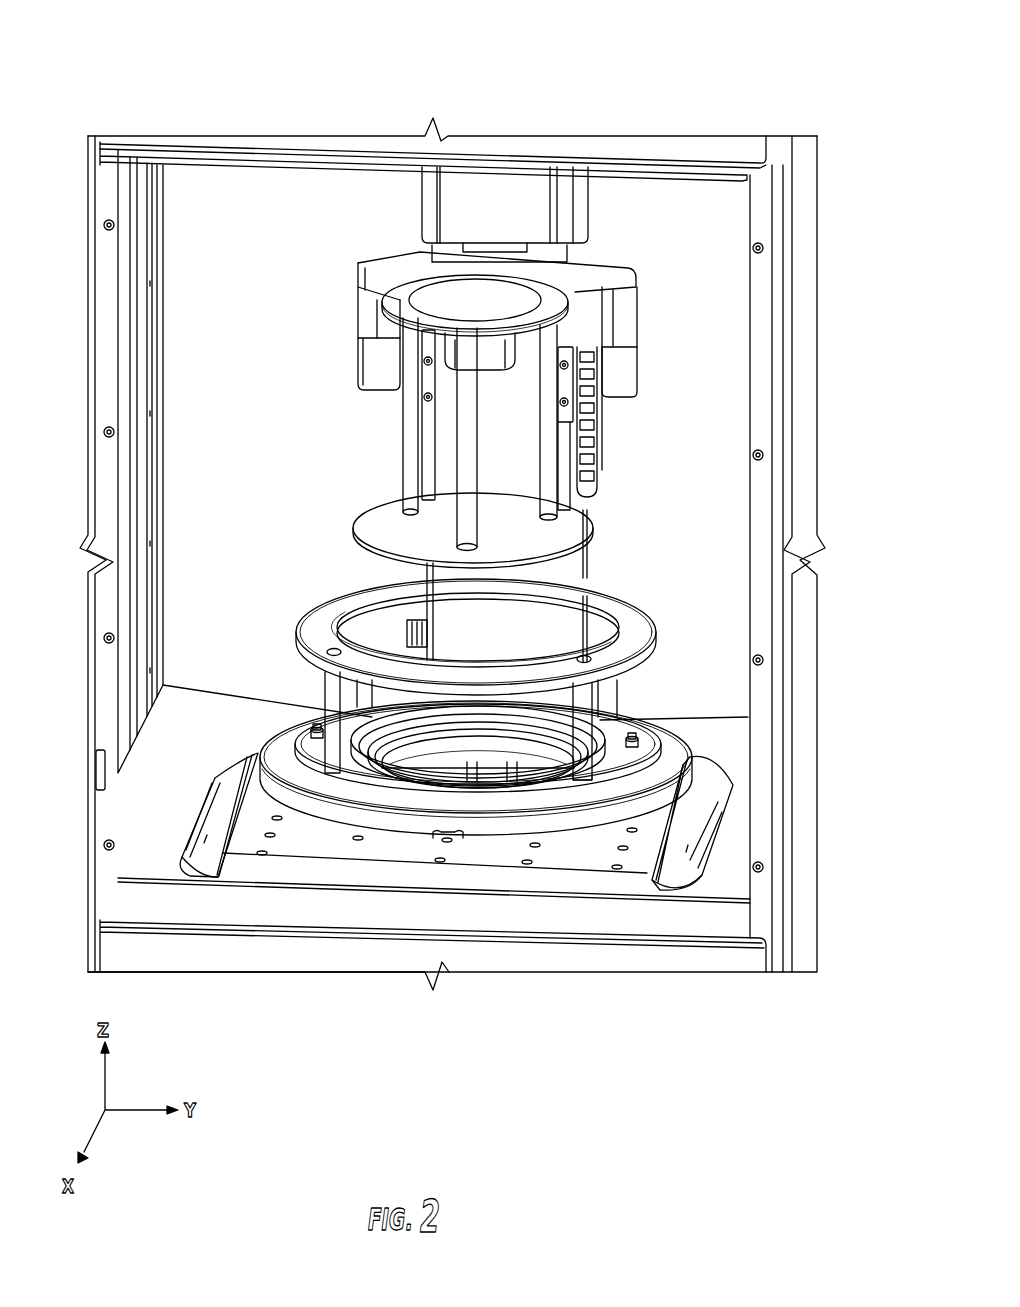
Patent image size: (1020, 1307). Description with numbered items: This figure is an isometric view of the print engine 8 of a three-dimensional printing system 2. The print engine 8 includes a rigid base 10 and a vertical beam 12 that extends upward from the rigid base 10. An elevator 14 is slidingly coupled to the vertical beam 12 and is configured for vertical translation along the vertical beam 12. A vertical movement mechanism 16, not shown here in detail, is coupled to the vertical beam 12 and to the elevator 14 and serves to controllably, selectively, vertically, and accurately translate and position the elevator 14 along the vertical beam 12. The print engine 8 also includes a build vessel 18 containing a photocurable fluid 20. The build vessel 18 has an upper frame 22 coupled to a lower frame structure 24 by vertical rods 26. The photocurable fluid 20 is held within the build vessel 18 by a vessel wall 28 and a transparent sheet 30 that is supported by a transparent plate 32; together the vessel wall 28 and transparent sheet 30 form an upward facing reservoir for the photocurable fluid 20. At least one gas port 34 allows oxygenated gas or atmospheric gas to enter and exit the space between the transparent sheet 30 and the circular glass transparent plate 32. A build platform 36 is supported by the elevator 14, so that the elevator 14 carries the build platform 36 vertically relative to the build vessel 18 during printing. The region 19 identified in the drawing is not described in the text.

The 3D printing system 2 is at (640, 55).
The print engine 8 is at (617, 202).
The rigid base 10 is at (632, 845).
The vertical beam 12 is at (512, 190).
The elevator 14 is at (608, 330).
The vertical movement mechanism 16 is at (517, 452).
The build vessel 18 is at (700, 665).
The ring opening 19 is at (545, 633).
The photocurable fluid 20 is at (330, 713).
The upper frame 22 is at (312, 602).
The lower frame structure 24 is at (400, 753).
The vertical rods 26 is at (580, 785).
The vessel wall 28 is at (413, 802).
The transparent sheet 30 is at (455, 775).
The transparent plate 32 is at (478, 872).
The gas port 34 is at (322, 737).
The build platform 36 is at (412, 457).